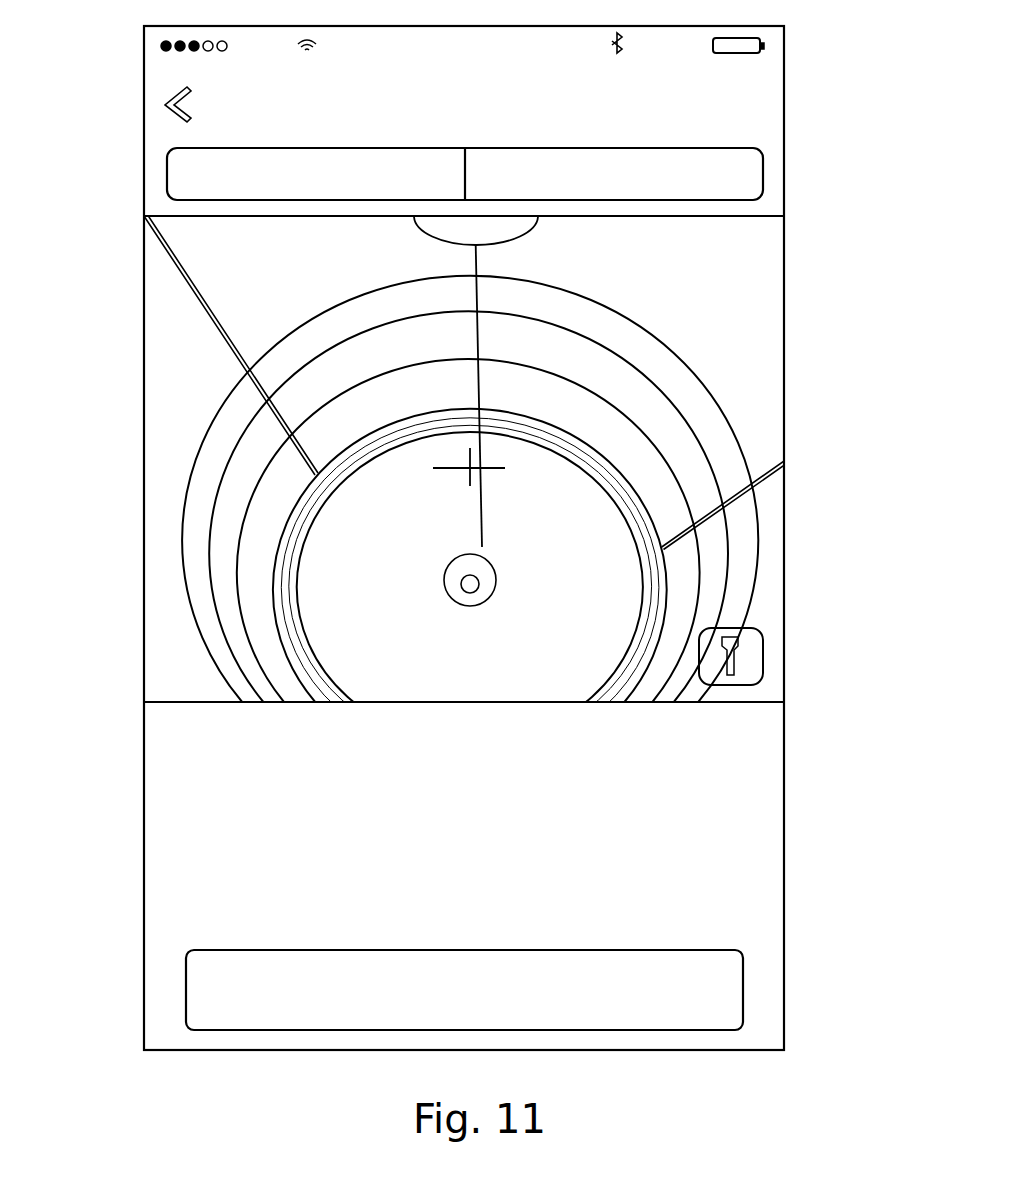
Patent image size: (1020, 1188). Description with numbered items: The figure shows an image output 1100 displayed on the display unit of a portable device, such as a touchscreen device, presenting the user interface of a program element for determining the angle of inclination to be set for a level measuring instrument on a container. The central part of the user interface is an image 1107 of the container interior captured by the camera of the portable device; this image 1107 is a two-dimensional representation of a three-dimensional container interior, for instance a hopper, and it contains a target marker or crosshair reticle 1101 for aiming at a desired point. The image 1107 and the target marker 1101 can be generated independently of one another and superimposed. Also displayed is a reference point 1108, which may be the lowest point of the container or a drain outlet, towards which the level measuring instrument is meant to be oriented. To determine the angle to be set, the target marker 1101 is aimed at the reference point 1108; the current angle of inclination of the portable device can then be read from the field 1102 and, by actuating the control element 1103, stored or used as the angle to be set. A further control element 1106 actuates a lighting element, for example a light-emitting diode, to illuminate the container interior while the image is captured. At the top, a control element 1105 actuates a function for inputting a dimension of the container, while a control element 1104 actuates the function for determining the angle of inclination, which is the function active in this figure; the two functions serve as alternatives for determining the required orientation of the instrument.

The image output 1100 is at (800, 646).
The target marker 1101 is at (440, 468).
The field 1102 is at (592, 835).
The control element 1103 is at (280, 968).
The control element 1104 is at (742, 174).
The control element 1105 is at (186, 176).
The control element 1106 is at (750, 670).
The image 1107 is at (752, 278).
The reference point 1108 is at (479, 588).